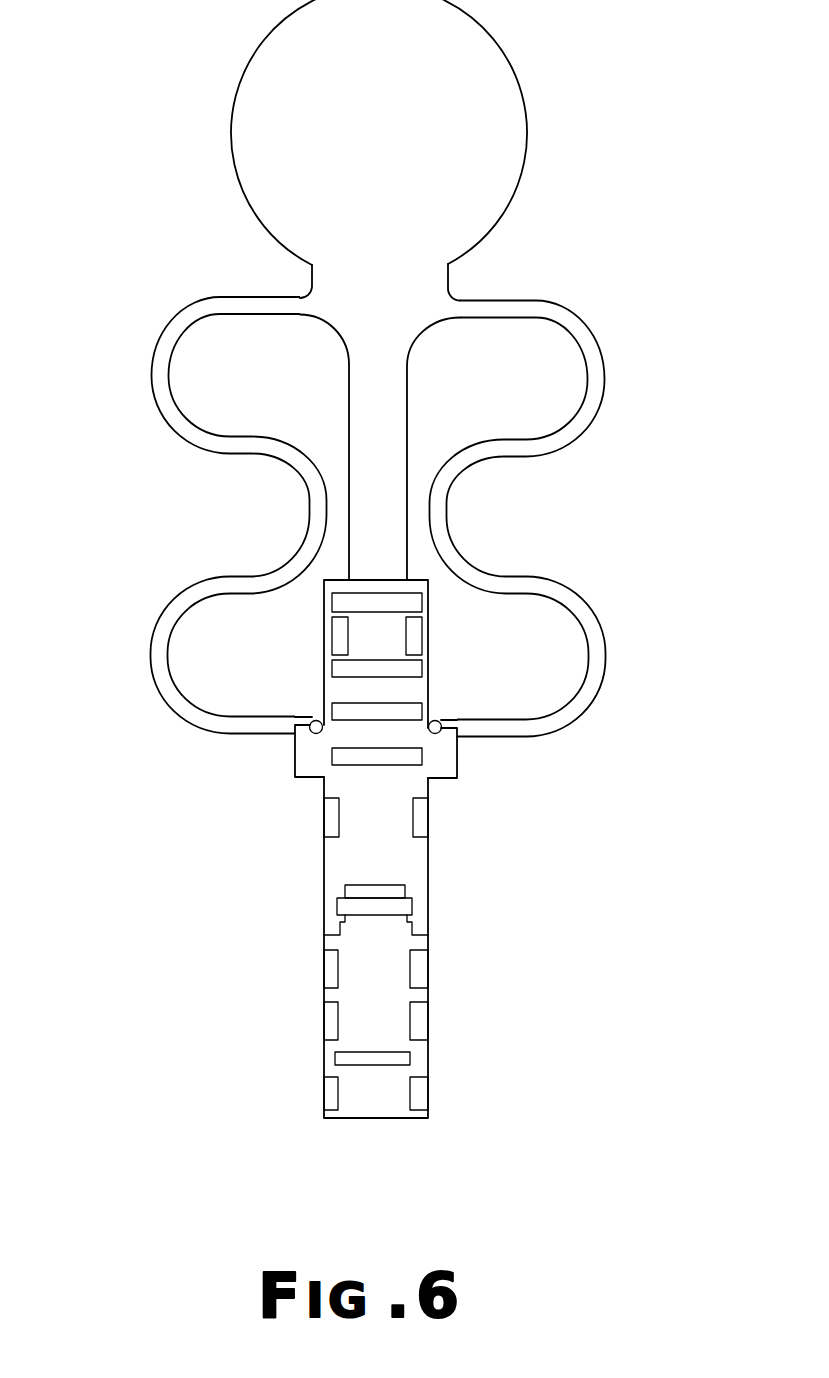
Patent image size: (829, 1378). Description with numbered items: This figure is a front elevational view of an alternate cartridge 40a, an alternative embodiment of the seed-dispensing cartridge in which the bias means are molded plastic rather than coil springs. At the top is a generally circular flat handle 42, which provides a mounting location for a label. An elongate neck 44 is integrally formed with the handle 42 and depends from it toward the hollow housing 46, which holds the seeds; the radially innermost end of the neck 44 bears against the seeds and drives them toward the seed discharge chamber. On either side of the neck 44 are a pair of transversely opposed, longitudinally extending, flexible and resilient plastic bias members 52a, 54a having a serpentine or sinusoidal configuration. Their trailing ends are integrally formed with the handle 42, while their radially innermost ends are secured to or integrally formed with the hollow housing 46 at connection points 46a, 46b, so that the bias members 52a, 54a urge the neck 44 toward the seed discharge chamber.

The alternate cartridge 40a is at (600, 162).
The flat handle 42 is at (353, 152).
The neck 44 is at (380, 422).
The hollow housing 46 is at (462, 977).
The connection point 46a is at (295, 752).
The connection point 46b is at (457, 753).
The bias member 52a is at (152, 374).
The bias member 54a is at (525, 582).